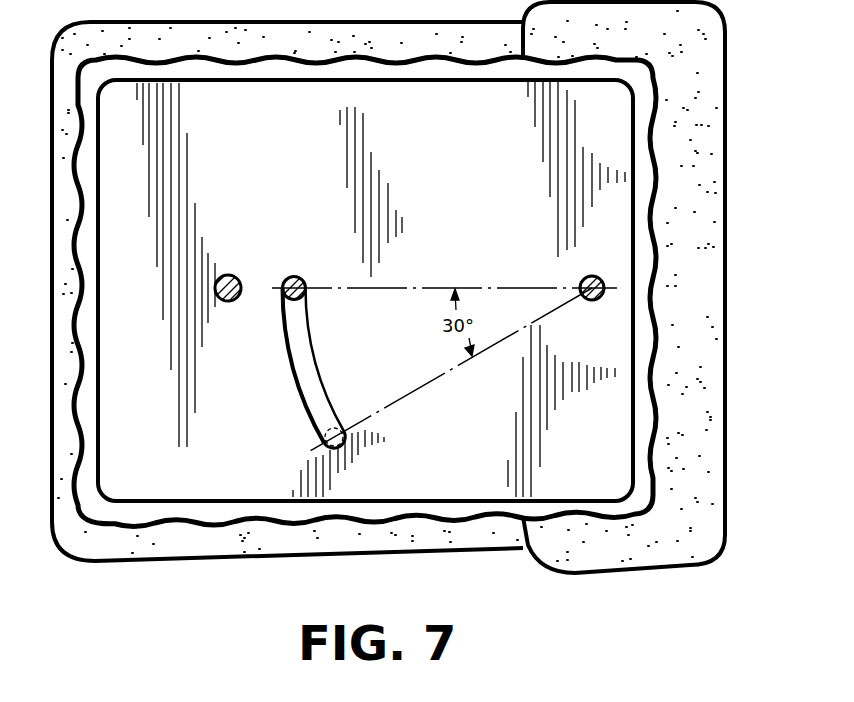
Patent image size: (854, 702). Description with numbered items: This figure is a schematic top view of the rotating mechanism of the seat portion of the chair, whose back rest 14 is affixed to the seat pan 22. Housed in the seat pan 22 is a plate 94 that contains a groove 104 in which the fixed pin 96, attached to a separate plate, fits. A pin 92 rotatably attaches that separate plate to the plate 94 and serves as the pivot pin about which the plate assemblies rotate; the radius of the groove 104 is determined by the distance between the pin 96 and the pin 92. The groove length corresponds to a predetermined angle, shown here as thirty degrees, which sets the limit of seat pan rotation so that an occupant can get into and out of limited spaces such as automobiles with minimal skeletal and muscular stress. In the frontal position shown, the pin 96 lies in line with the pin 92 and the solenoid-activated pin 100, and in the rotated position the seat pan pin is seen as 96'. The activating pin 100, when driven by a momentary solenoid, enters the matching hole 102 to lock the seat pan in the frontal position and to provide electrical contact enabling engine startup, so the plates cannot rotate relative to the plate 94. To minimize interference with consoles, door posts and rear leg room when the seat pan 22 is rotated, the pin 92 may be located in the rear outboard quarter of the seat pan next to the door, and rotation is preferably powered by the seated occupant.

The back rest 14 is at (703, 90).
The seat pan 22 is at (348, 45).
The plate 94 is at (271, 100).
The pin 92 is at (587, 280).
The fixed pin 96 is at (301, 267).
The seat pan pin in rotated position 96' is at (299, 449).
The activating pin 100 is at (232, 301).
The matching hole 102 is at (229, 275).
The groove 104 is at (306, 386).